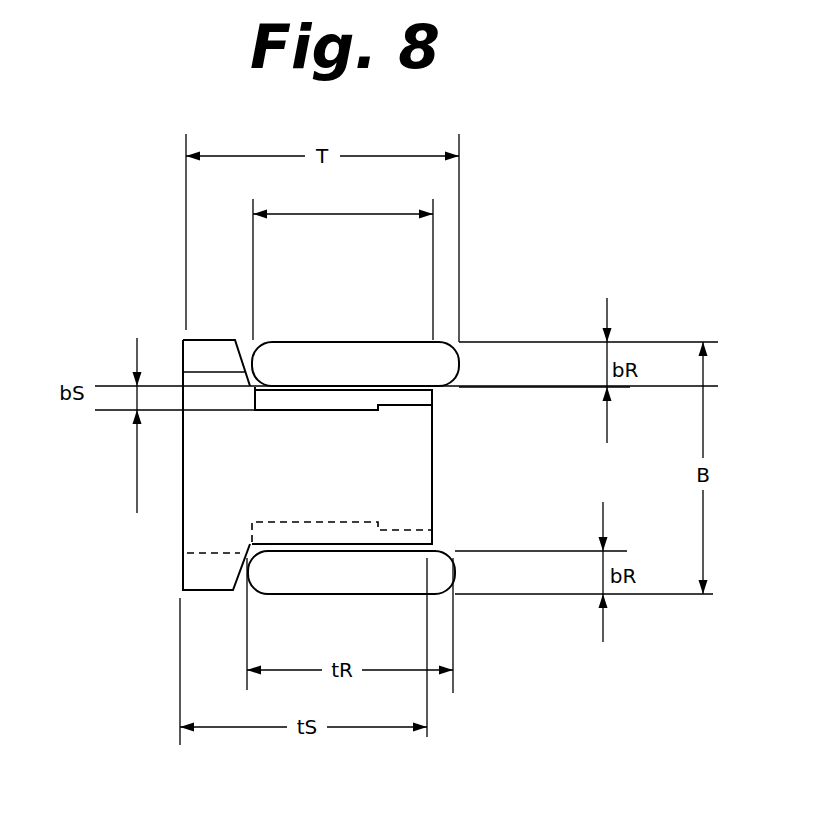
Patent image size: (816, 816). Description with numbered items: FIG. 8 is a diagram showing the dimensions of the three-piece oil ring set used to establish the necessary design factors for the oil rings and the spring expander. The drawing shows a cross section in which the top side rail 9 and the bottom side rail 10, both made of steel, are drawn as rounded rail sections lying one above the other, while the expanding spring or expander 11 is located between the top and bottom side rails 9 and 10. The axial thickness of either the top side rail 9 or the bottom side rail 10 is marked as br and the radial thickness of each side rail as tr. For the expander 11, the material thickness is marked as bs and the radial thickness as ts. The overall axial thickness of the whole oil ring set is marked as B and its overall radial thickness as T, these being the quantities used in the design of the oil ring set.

The top side rail 9 is at (352, 357).
The bottom side rail 10 is at (402, 552).
The expander 11 is at (310, 404).